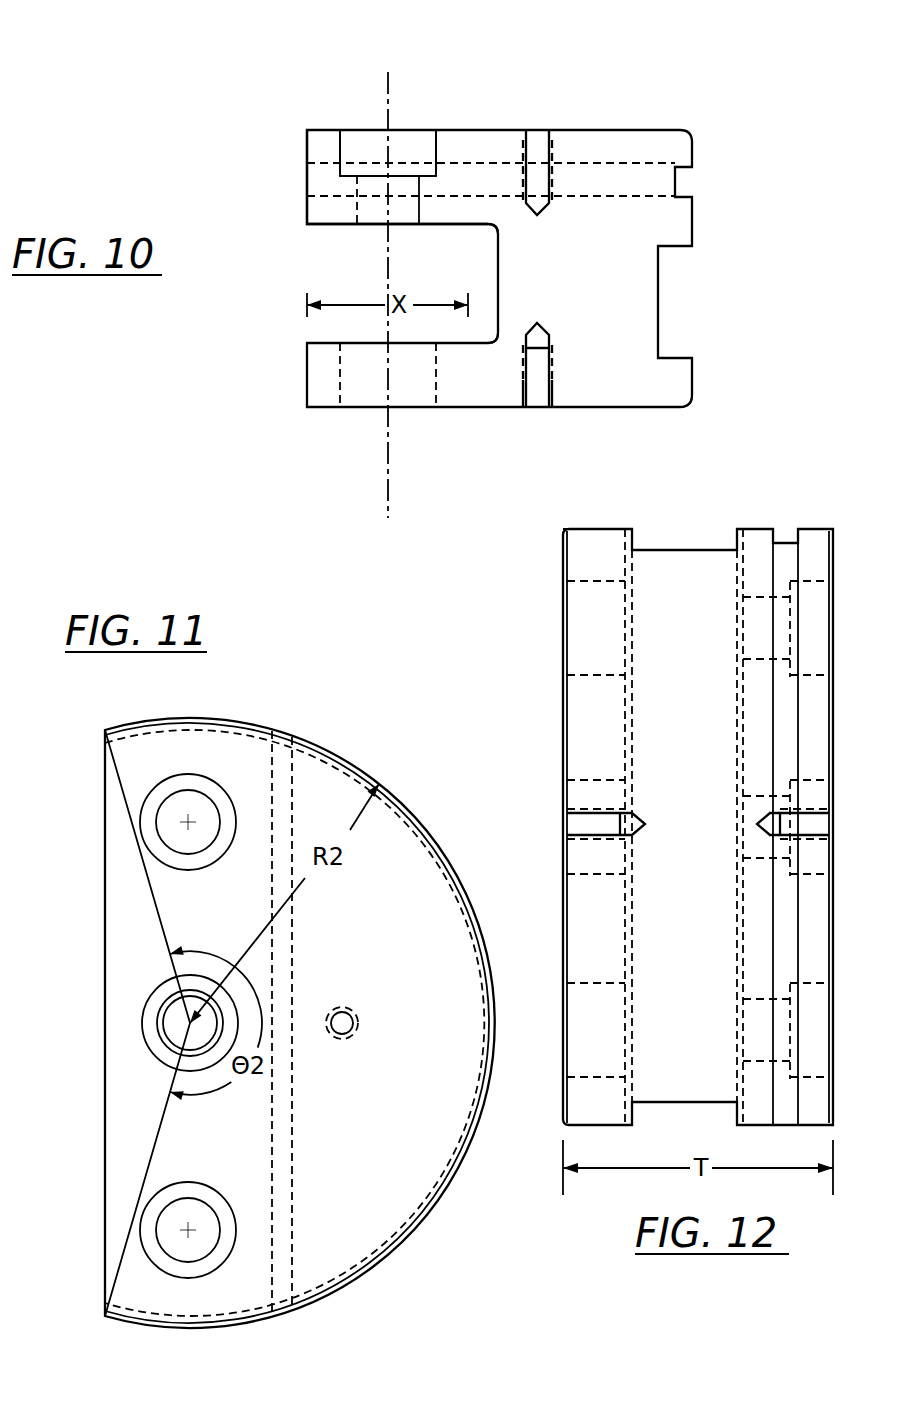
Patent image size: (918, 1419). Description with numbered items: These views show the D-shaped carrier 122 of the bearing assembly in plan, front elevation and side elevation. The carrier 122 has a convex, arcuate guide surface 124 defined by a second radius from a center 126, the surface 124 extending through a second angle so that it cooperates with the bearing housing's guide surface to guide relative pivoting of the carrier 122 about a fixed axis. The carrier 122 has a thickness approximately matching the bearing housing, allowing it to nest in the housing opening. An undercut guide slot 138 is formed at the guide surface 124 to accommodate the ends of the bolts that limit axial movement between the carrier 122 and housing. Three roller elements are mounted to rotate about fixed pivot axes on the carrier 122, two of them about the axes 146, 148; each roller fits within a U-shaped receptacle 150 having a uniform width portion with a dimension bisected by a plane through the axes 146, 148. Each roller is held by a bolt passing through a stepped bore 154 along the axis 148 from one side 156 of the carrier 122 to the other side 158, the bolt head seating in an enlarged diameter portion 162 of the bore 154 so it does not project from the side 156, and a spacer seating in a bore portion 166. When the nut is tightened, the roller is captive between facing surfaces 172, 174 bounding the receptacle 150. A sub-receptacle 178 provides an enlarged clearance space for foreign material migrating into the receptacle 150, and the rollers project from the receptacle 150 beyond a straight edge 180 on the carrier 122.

In FIG. 10, the carrier 122 is at (628, 325).
In FIG. 11, the carrier 122 is at (408, 917).
In FIG. 12, the carrier 122 is at (567, 739).
In FIG. 10, the guide surface 124 is at (693, 382).
In FIG. 11, the guide surface 124 is at (430, 832).
In FIG. 12, the guide surface 124 is at (600, 550).
In FIG. 11, the center 126 is at (190, 1023).
In FIG. 10, the undercut guide slot 138 is at (686, 168).
In FIG. 11, the undercut guide slot 138 is at (328, 752).
In FIG. 12, the undercut guide slot 138 is at (776, 572).
In FIG. 11, the axis 146 is at (190, 822).
In FIG. 10, the axis 148 is at (388, 462).
In FIG. 11, the axis 148 is at (188, 1230).
In FIG. 10, the U-shaped receptacle 150 is at (325, 225).
In FIG. 11, the U-shaped receptacle 150 is at (292, 1120).
In FIG. 10, the stepped bore 154 is at (342, 152).
In FIG. 10, the side 156 is at (318, 128).
In FIG. 10, the side 158 is at (320, 407).
In FIG. 10, the enlarged diameter portion 162 is at (436, 156).
In FIG. 10, the bore portion 166 is at (405, 410).
In FIG. 10, the facing surface 172 is at (345, 225).
In FIG. 10, the facing surface 174 is at (348, 343).
In FIG. 10, the sub-receptacle 178 is at (483, 222).
In FIG. 11, the straight edge 180 is at (105, 922).